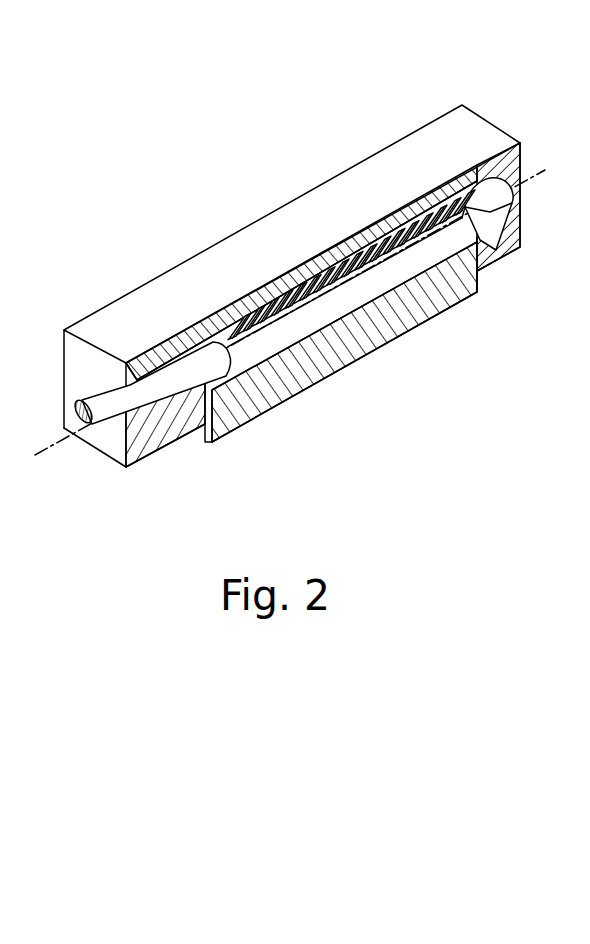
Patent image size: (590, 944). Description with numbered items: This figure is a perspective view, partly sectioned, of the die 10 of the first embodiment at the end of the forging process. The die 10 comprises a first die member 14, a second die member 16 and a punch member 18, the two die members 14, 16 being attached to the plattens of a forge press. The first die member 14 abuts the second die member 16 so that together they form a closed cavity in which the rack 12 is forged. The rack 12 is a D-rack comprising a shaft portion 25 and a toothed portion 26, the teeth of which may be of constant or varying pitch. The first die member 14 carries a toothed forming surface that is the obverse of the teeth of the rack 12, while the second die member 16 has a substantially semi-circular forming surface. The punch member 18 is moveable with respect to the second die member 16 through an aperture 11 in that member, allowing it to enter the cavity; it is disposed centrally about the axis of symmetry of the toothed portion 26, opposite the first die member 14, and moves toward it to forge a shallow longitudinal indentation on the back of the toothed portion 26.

The die 10 is at (226, 196).
The aperture 11 is at (480, 249).
The rack 12 is at (166, 420).
The first die member 14 is at (438, 141).
The second die member 16 is at (512, 218).
The punch member 18 is at (343, 351).
The shaft portion 25 is at (168, 373).
The toothed portion 26 is at (343, 276).